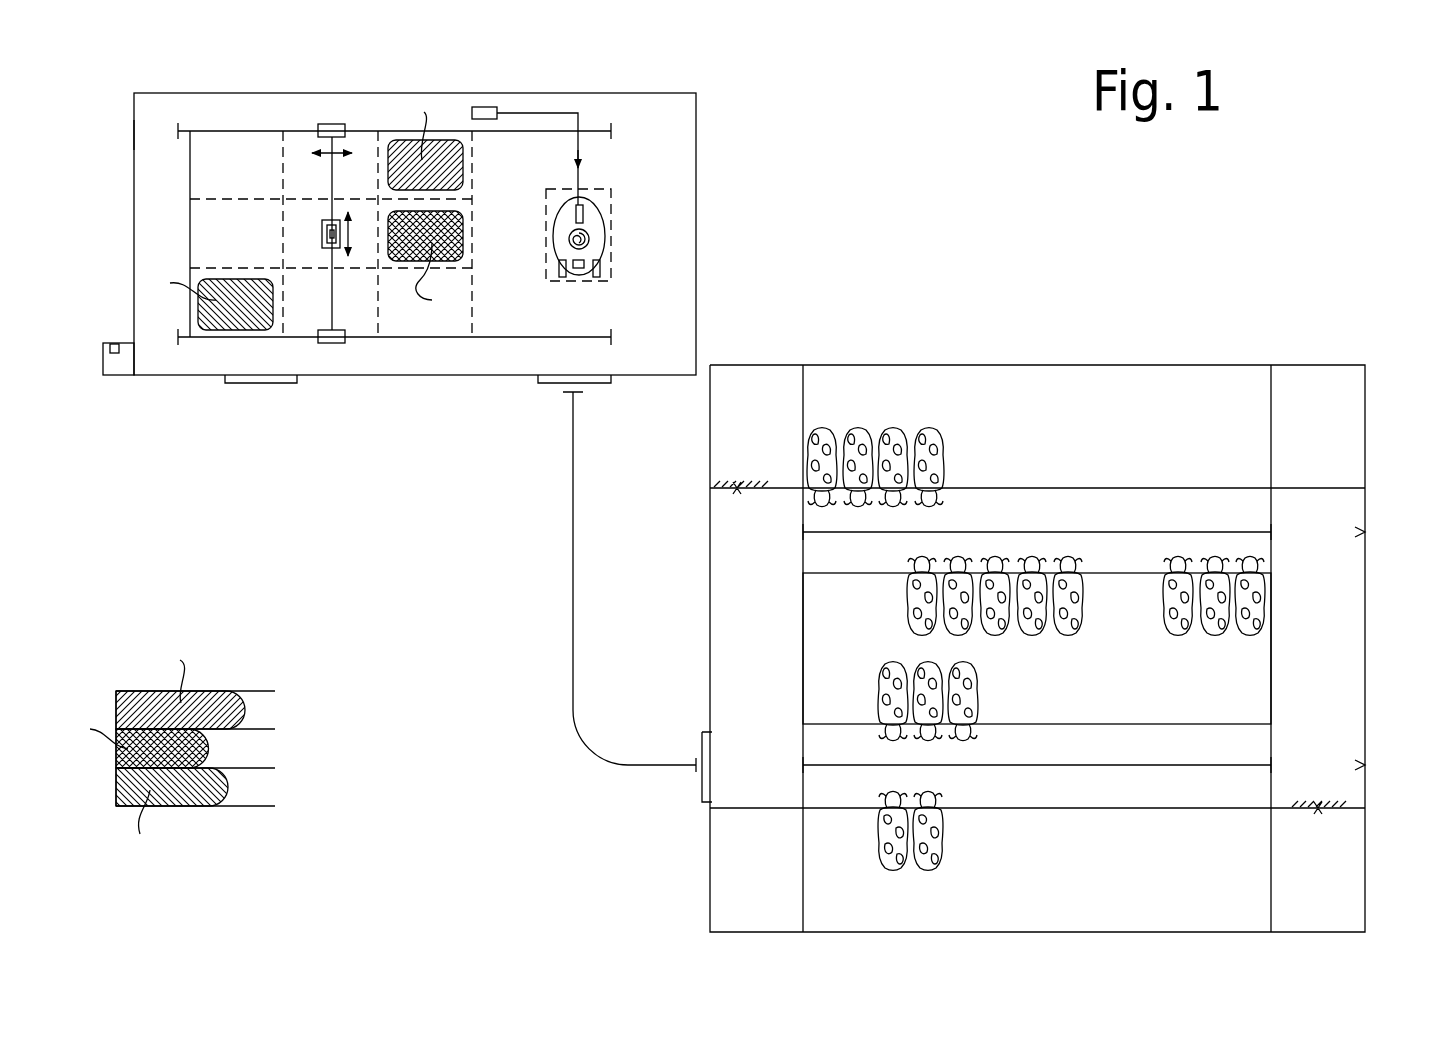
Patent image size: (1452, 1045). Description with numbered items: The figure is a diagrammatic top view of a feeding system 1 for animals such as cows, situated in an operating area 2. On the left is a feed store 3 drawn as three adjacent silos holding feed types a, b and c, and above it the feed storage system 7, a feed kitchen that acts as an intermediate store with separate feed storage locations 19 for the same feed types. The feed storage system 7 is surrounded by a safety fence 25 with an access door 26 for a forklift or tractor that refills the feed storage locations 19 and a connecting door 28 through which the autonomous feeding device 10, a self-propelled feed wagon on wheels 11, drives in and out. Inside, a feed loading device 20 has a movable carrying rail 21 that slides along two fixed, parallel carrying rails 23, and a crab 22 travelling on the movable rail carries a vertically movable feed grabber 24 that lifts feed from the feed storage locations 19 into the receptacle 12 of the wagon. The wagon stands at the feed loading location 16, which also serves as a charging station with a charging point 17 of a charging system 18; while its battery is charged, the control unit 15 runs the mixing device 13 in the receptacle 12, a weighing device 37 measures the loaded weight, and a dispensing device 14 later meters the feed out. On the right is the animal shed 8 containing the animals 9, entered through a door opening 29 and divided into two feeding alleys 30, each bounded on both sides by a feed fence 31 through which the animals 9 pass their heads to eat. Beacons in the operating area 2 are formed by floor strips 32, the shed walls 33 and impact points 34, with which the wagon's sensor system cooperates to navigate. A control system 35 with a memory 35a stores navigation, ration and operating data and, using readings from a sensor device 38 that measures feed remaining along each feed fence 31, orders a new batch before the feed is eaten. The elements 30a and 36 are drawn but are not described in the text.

The feeding system 1 is at (1263, 310).
The operating area 2 is at (922, 325).
The feed store 3 is at (278, 755).
The feed storage system 7 is at (222, 90).
The animal shed 8 is at (1318, 340).
The animals 9 is at (927, 438).
The autonomous feeding device 10 is at (608, 237).
The wheels 11 is at (584, 208).
The receptacle 12 is at (589, 241).
The mixing device 13 is at (569, 240).
The dispensing device 14 is at (563, 218).
The control unit 15 is at (566, 205).
The feed loading location 16 is at (603, 188).
The charging point 17 is at (578, 162).
The charging system 18 is at (492, 106).
The feed storage locations 19 is at (216, 180).
The feed loading device 20 is at (216, 340).
The movable carrying rail 21 is at (316, 150).
The crab 22 is at (327, 240).
The fixed carrying rails 23 is at (396, 130).
The feed grabber 24 is at (322, 226).
The safety fence 25 is at (134, 132).
The access door 26 is at (258, 383).
The connecting door 28 is at (540, 384).
The door opening 29 is at (700, 800).
The feeding alleys 30 is at (1040, 540).
The cross alley 30a is at (1318, 697).
The feed fence 31 is at (835, 573).
The strips 32 is at (573, 562).
The walls 33 is at (712, 676).
The impact points 34 is at (740, 485).
The control system 35 is at (120, 372).
The memory 35a is at (111, 347).
The rail 36 is at (338, 250).
The weighing device 37 is at (578, 269).
The sensor device 38 is at (556, 252).